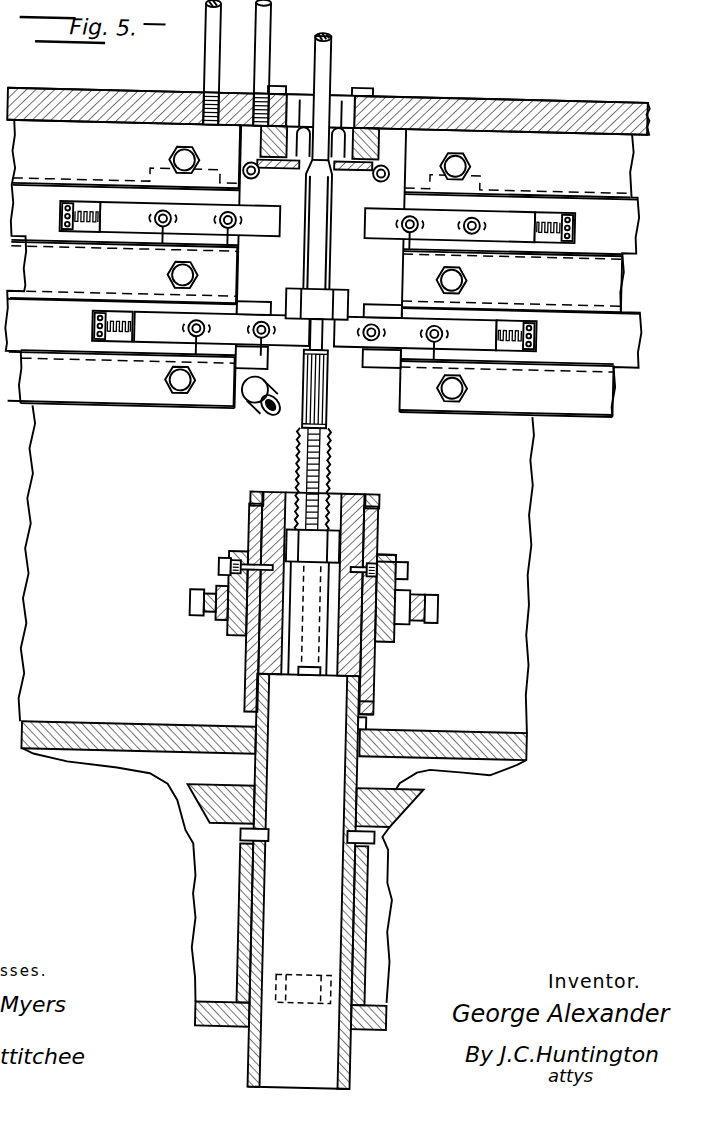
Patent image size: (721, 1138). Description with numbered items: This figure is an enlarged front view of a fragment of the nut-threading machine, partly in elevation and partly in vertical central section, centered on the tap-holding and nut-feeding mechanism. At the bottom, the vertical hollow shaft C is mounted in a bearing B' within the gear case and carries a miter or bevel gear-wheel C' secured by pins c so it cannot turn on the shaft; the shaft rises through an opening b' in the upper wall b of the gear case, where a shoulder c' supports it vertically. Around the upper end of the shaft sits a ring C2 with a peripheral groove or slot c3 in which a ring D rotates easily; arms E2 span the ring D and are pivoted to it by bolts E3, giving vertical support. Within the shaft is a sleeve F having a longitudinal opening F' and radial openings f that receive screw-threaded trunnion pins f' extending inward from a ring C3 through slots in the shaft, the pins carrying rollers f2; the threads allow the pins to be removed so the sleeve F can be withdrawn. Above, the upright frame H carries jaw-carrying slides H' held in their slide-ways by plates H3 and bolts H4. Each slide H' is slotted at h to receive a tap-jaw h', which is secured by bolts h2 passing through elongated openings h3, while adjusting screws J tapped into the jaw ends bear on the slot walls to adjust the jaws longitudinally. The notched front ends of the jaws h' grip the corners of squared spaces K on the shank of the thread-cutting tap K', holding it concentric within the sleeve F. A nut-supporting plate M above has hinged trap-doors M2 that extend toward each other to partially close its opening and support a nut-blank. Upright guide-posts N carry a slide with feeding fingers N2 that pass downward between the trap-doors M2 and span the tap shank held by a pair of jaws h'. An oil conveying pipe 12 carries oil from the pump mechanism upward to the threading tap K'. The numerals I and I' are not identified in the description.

The top plate I is at (328, 97).
The bracket I' is at (320, 103).
The upright guide-posts N is at (242, 38).
The feeding fingers N2 is at (318, 44).
The nut-supporting plate M is at (356, 170).
The trap-doors M2 is at (270, 172).
The upright frame H is at (323, 428).
The jaw-carrying slides H' is at (319, 285).
The plates H3 is at (320, 267).
The bolts H4 is at (182, 158).
The adjusting screws J is at (60, 206).
The slots h is at (316, 251).
The tap-jaws h' is at (364, 273).
The bolts h2 is at (458, 331).
The elongated openings h3 is at (166, 222).
The squared spaces K is at (320, 264).
The thread-cutting tap K' is at (330, 442).
The oil conveying pipe 12 is at (262, 406).
The vertical hollow shaft C is at (330, 797).
The miter or bevel gear-wheel C' is at (322, 894).
The ring C2 is at (256, 514).
The ring C3 is at (396, 562).
The pins c is at (330, 831).
The shoulder c' is at (388, 695).
The peripheral groove or slot c3 is at (238, 638).
The radial openings f is at (301, 548).
The trunnion pins f' is at (316, 562).
The rollers f2 is at (230, 566).
The arms E2 is at (218, 622).
The bolts E3 is at (190, 603).
The ring D is at (410, 594).
The sleeve F is at (306, 834).
The longitudinal opening F' is at (311, 602).
The upper wall b is at (272, 853).
The opening b' is at (385, 715).
The bearing B' is at (308, 936).